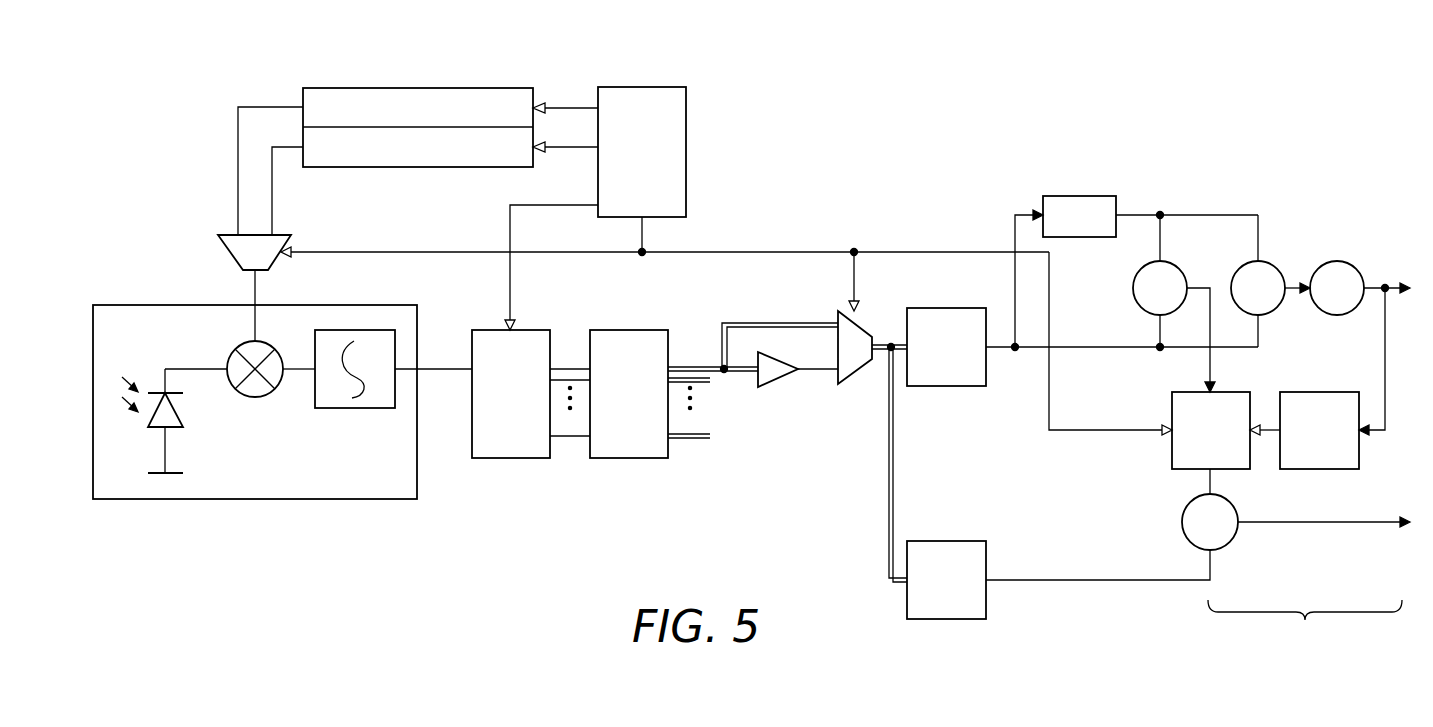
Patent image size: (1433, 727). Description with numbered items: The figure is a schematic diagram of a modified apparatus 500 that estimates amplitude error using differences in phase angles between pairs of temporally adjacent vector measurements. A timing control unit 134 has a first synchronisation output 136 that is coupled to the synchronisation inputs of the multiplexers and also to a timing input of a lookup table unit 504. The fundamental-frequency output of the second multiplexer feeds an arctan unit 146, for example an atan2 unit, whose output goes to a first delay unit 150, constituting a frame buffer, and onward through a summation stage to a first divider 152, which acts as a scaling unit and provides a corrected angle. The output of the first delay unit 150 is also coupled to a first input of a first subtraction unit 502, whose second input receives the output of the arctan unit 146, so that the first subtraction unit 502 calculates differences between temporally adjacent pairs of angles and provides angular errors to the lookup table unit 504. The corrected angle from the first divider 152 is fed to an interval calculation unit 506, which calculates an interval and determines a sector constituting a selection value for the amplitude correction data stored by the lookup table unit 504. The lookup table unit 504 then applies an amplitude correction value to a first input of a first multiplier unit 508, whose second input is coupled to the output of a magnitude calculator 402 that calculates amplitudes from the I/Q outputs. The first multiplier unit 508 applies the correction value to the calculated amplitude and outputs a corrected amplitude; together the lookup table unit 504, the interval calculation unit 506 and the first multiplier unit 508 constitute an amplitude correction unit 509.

The modified apparatus 500 is at (158, 110).
The timing control unit 134 is at (623, 165).
The first synchronisation output 136 is at (649, 218).
The arctan unit 146 is at (927, 360).
The first delay unit 150 is at (1061, 230).
The first divider 152 is at (1336, 261).
The magnitude calculator 402 is at (927, 593).
The first subtraction unit 502 is at (1133, 288).
The lookup table unit 504 is at (1192, 443).
The interval calculation unit 506 is at (1301, 443).
The first multiplier unit 508 is at (1182, 522).
The amplitude correction unit 509 is at (1305, 629).